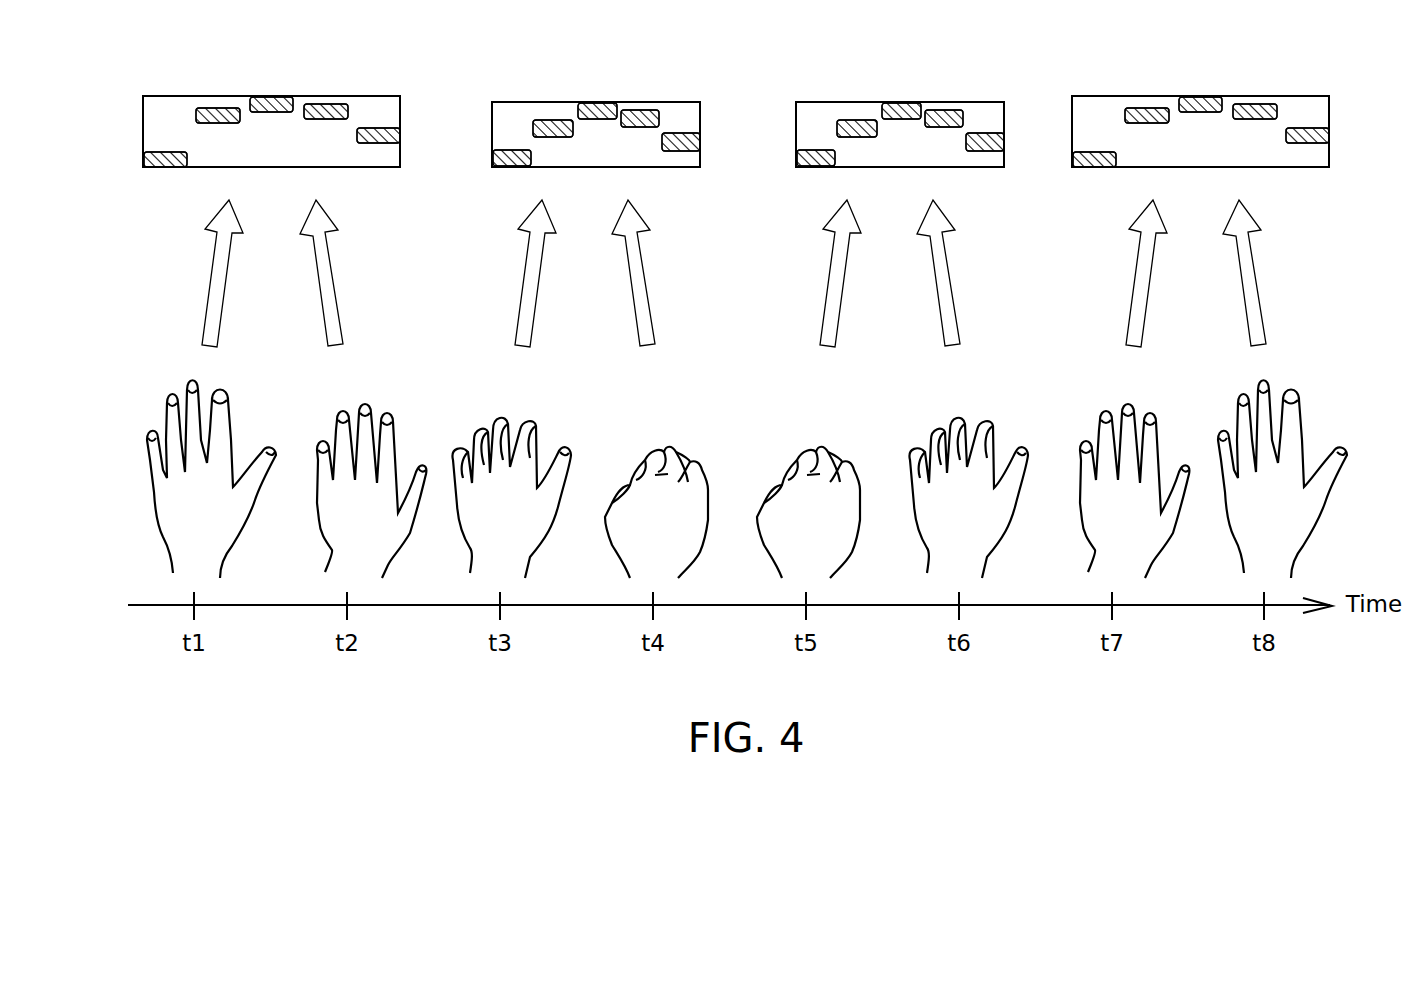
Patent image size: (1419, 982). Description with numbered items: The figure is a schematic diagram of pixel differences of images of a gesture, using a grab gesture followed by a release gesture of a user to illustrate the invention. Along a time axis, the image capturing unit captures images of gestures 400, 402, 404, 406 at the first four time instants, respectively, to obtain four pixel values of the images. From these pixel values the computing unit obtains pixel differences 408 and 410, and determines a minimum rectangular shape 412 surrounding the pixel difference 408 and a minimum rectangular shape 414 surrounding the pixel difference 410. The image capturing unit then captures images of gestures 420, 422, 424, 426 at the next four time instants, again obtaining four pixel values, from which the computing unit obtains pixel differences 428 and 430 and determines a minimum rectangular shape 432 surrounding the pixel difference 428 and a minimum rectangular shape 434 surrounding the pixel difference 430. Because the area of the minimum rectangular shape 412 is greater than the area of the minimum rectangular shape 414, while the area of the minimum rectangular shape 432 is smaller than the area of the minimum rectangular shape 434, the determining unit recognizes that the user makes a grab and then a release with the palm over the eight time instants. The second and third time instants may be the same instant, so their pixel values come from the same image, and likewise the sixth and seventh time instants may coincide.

The gesture 400 is at (242, 437).
The gesture 402 is at (400, 442).
The gesture 404 is at (540, 440).
The gesture 406 is at (663, 448).
The pixel difference 408 is at (272, 101).
The pixel difference 410 is at (596, 103).
The minimum rectangular shape 412 is at (143, 123).
The minimum rectangular shape 414 is at (492, 130).
The gesture 420 is at (815, 448).
The gesture 422 is at (995, 445).
The gesture 424 is at (1165, 442).
The gesture 426 is at (1312, 437).
The pixel difference 428 is at (900, 103).
The pixel difference 430 is at (1201, 101).
The minimum rectangular shape 432 is at (796, 130).
The minimum rectangular shape 434 is at (1072, 123).